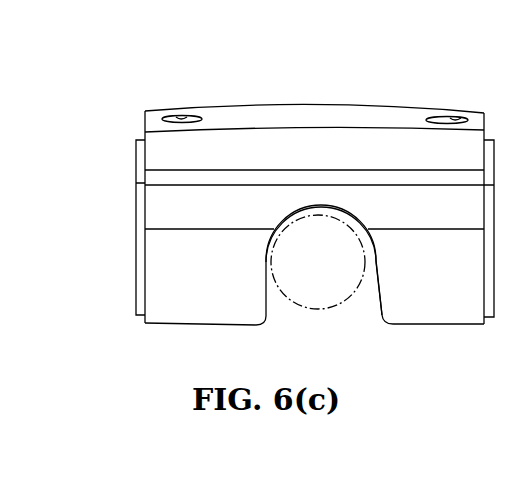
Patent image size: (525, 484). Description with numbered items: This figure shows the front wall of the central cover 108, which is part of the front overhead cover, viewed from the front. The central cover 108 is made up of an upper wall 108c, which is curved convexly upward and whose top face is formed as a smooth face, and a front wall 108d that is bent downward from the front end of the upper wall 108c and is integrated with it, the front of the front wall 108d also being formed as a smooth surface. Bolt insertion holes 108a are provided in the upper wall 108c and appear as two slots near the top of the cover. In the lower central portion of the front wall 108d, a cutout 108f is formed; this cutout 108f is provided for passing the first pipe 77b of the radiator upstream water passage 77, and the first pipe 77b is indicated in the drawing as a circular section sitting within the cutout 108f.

The central cover 108 is at (117, 150).
The bolt insertion holes 108a is at (176, 117).
The upper wall 108c is at (307, 112).
The front wall 108d is at (155, 258).
The cutout 108f is at (372, 305).
The radiator upstream water passage 77 is at (327, 311).
The first pipe 77b is at (298, 305).